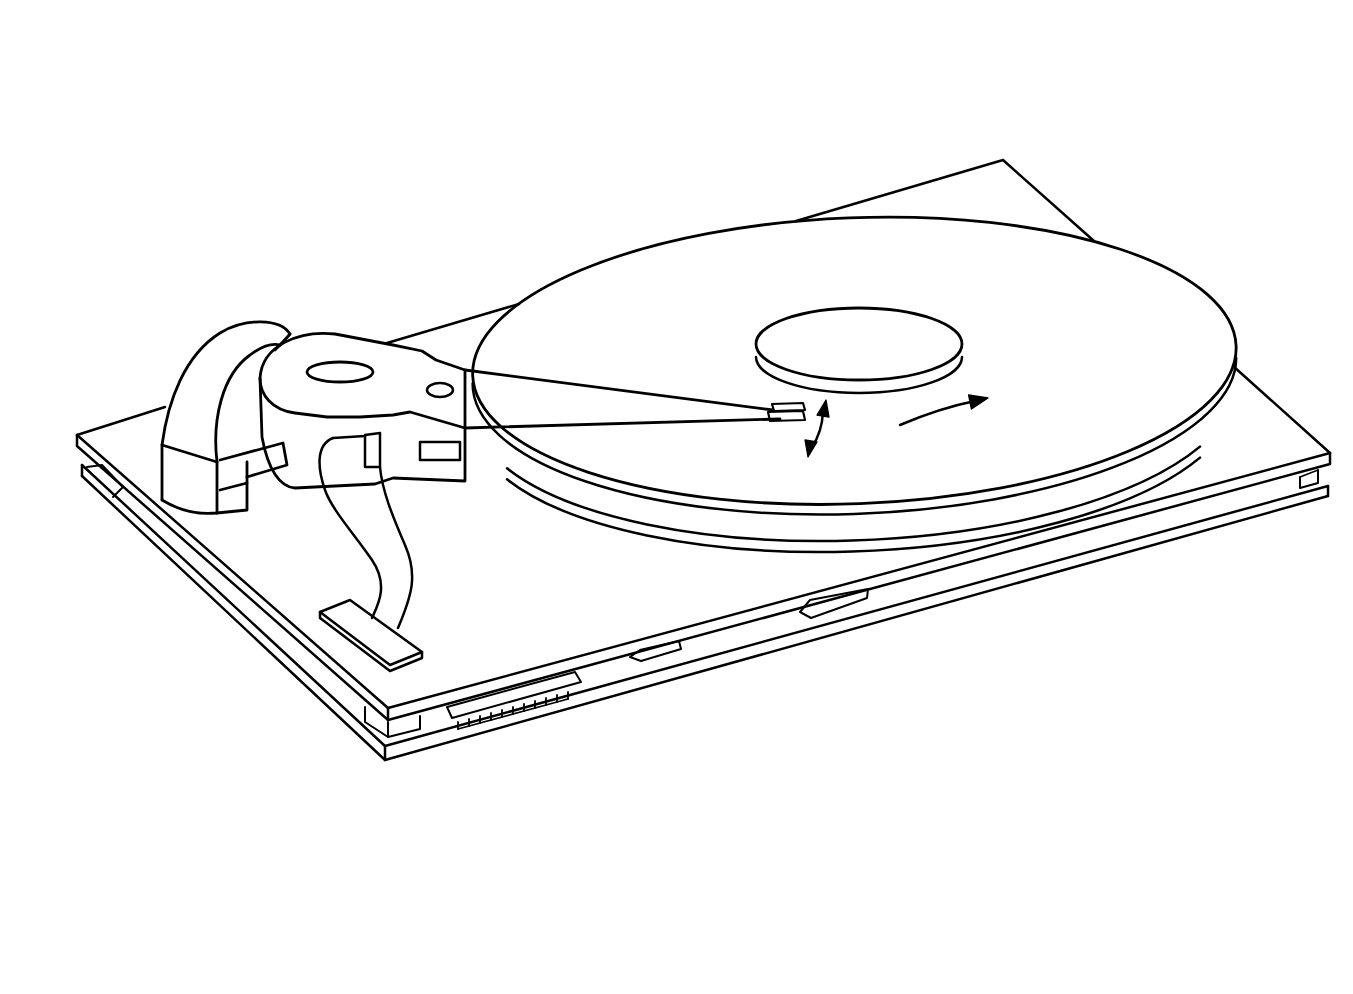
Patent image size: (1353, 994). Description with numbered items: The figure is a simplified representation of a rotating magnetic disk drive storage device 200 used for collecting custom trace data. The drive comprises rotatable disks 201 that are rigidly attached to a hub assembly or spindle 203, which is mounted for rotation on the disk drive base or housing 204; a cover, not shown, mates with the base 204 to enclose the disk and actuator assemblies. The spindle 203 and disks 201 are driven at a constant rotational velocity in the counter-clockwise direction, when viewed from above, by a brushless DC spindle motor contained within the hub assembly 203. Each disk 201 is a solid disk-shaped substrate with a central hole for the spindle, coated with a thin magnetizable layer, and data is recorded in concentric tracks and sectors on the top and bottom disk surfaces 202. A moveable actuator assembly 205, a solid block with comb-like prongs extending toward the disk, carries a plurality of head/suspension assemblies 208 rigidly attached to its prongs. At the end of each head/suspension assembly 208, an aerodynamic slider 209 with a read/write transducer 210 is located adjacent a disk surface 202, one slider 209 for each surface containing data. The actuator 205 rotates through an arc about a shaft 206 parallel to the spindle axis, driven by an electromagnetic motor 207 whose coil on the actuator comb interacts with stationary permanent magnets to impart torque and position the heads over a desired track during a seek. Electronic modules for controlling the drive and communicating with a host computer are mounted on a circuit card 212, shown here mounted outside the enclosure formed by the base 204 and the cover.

The rotating magnetic disk drive storage device 200 is at (703, 458).
The rotatable disk 201 is at (1190, 425).
The disk surface 202 is at (802, 243).
The hub assembly or spindle 203 is at (898, 335).
The disk drive base or housing 204 is at (1263, 403).
The actuator assembly 205 is at (363, 337).
The shaft 206 is at (338, 373).
The electromagnetic motor 207 is at (167, 410).
The head/suspension assembly 208 is at (520, 395).
The aerodynamic slider 209 is at (793, 428).
The read/write transducer 210 is at (815, 427).
The circuit card 212 is at (742, 660).